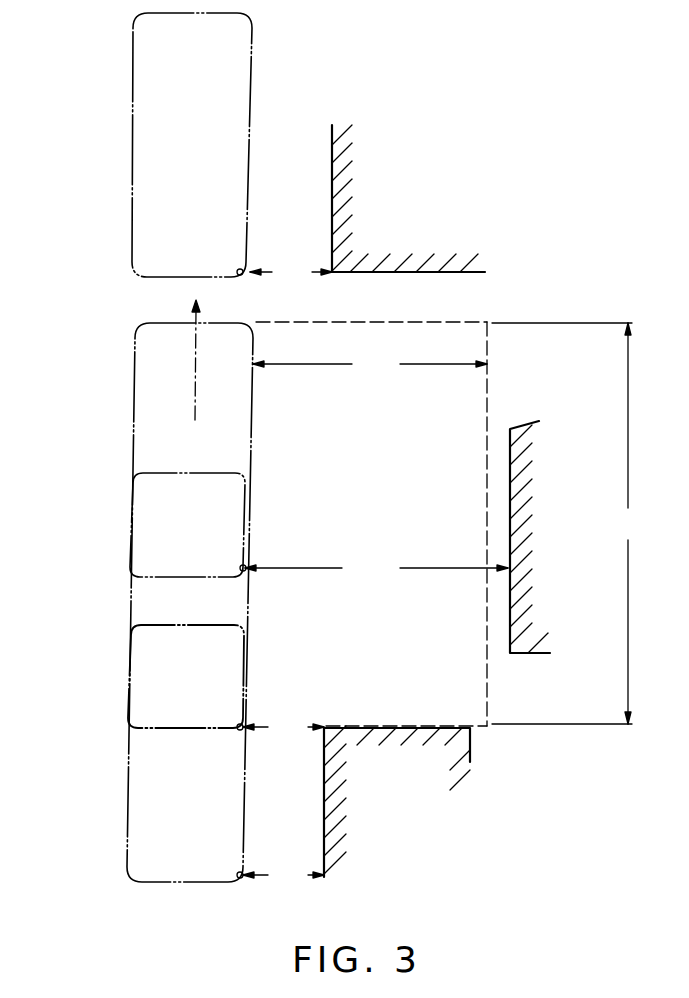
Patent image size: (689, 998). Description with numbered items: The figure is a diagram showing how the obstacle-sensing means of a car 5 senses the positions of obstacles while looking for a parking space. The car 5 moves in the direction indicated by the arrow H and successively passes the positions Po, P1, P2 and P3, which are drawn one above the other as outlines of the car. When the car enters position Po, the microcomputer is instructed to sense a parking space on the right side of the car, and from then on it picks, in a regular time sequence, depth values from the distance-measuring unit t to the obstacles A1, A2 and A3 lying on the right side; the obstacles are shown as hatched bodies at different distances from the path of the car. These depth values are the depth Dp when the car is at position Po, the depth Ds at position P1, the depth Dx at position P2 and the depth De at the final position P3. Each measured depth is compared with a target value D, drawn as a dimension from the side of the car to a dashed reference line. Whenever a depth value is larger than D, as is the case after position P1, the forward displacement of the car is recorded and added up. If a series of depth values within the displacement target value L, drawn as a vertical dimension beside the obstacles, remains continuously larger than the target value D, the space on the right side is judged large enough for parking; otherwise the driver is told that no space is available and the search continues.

The car 5 is at (86, 502).
The position P3 is at (133, 200).
The position P2 is at (129, 432).
The position P1 is at (127, 630).
The position Po is at (127, 828).
The distance-measuring unit t is at (244, 724).
The arrow H is at (203, 357).
The depth De is at (291, 272).
The target value D is at (370, 364).
The depth Dx is at (376, 568).
The depth Ds is at (283, 727).
The depth Dp is at (283, 875).
The displacement target value L is at (562, 523).
The obstacle A1 is at (410, 821).
The obstacle A2 is at (580, 549).
The obstacle A3 is at (430, 215).